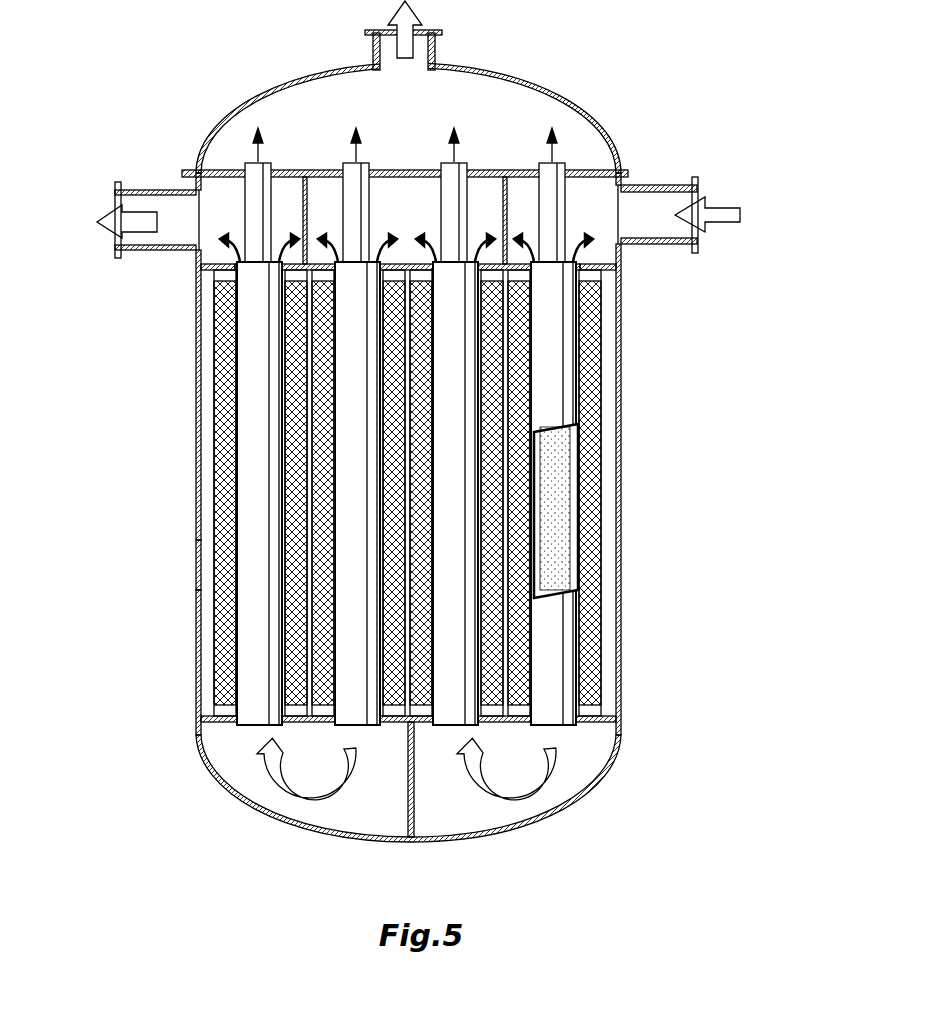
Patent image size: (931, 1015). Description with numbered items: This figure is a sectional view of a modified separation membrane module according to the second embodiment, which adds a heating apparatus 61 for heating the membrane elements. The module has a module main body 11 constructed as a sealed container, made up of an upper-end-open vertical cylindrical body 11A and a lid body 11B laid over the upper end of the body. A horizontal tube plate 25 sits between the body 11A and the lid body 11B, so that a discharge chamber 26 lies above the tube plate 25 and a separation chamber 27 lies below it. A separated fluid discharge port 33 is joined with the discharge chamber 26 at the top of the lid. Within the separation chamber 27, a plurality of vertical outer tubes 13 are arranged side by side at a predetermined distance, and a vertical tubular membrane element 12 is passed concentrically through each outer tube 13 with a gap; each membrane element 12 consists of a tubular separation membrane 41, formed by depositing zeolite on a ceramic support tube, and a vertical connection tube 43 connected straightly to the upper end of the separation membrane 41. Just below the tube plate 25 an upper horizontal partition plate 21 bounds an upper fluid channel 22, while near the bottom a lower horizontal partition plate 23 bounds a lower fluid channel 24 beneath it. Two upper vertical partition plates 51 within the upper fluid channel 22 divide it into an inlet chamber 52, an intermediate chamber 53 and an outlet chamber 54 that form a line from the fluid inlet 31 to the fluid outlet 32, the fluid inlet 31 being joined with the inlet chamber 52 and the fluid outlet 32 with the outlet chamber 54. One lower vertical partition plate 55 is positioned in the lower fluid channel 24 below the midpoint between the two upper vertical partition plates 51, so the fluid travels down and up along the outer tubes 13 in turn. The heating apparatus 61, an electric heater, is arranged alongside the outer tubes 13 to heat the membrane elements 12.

The module main body 11 is at (434, 421).
The body 11A is at (196, 479).
The lid body 11B is at (278, 80).
The membrane element 12 is at (575, 560).
The outer tube 13 is at (615, 493).
The upper horizontal partition plate 21 is at (598, 303).
The upper fluid channel 22 is at (225, 183).
The lower horizontal partition plate 23 is at (212, 717).
The lower fluid channel 24 is at (240, 778).
The tube plate 25 is at (473, 168).
The discharge chamber 26 is at (380, 126).
The separation chamber 27 is at (200, 575).
The fluid inlet 31 is at (661, 183).
The fluid outlet 32 is at (148, 182).
The separated fluid discharge port 33 is at (438, 44).
The tubular separation membrane 41 is at (563, 478).
The vertical connection tube 43 is at (563, 182).
The upper vertical partition plate 51 is at (305, 188).
The inlet chamber 52 is at (604, 262).
The intermediate chamber 53 is at (388, 223).
The outlet chamber 54 is at (222, 265).
The lower vertical partition plate 55 is at (408, 780).
The heating apparatus 61 is at (215, 396).